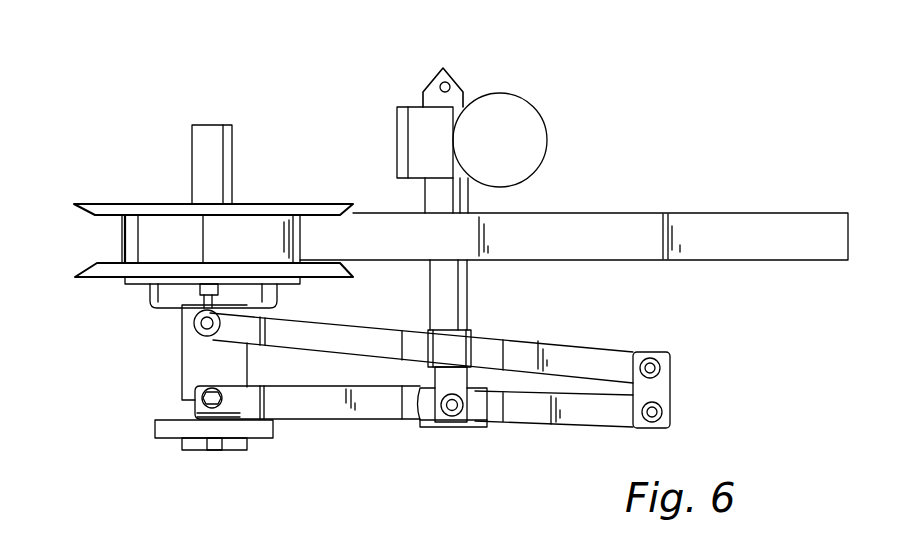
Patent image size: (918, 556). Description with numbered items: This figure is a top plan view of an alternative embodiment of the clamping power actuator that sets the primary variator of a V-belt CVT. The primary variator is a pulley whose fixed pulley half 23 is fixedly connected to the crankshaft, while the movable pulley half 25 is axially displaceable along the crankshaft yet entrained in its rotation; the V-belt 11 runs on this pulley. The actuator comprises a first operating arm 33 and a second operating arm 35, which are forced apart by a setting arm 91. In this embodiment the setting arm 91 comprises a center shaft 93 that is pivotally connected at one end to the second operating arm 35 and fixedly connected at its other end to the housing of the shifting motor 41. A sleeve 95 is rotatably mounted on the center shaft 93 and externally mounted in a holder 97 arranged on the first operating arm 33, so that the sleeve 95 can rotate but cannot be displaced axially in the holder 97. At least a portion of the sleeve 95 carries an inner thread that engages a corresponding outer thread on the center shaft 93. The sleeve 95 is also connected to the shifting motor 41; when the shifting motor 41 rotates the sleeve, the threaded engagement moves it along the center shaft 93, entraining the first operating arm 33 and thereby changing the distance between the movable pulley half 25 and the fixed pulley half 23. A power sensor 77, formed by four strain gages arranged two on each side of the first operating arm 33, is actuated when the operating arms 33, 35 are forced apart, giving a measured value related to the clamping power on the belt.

The V-belt 11 is at (708, 237).
The fixed pulley half 23 is at (150, 212).
The movable pulley half 25 is at (113, 268).
The first operating arm 33 is at (345, 336).
The second operating arm 35 is at (332, 403).
The shifting motor 41 is at (506, 118).
The setting arm 91 is at (467, 207).
The sleeve 95 is at (452, 297).
The holder 97 is at (455, 338).
The center shaft 93 is at (452, 378).
The power sensor 77 is at (420, 420).